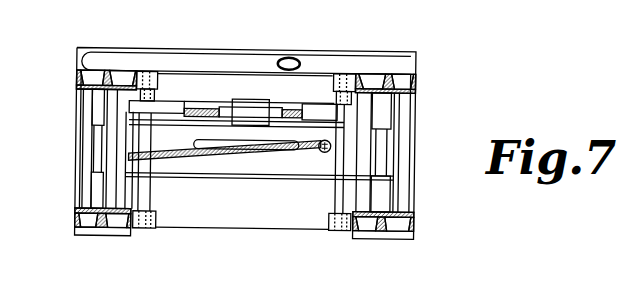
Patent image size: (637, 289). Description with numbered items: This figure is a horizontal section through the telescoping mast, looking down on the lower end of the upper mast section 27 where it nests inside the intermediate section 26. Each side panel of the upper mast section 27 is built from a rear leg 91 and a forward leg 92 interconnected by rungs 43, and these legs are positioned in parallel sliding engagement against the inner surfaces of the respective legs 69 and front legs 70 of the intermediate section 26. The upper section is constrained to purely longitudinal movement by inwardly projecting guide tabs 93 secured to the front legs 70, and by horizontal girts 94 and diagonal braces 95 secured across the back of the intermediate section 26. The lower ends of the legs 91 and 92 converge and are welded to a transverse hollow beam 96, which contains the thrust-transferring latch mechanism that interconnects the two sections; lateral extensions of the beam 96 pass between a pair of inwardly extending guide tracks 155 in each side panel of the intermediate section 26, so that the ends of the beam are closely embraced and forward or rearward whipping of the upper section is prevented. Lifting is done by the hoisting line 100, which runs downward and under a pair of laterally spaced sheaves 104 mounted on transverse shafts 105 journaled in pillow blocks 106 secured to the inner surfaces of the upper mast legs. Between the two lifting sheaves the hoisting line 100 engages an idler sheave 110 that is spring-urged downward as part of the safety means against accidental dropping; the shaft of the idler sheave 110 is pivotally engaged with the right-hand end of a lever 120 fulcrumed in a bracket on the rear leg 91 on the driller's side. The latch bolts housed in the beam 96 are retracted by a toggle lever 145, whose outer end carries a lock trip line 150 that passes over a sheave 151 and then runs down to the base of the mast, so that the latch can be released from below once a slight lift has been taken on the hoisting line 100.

The intermediate section 26 is at (76, 143).
The upper mast section 27 is at (202, 183).
The rungs 43 is at (83, 161).
The legs of the intermediate section 69 is at (80, 78).
The front legs of the intermediate section 70 is at (79, 216).
The rear leg 91 is at (126, 78).
The forward leg 92 is at (114, 220).
The guide tabs 93 is at (95, 230).
The horizontal girts 94 is at (316, 58).
The diagonal braces 95 is at (213, 62).
The transverse hollow beam 96 is at (266, 168).
The hoisting line 100 is at (210, 108).
The sheaves 104 is at (170, 97).
The transverse shafts 105 is at (146, 188).
The pillow blocks 106 is at (149, 74).
The idler sheave 110 is at (225, 108).
The lever 120 is at (270, 100).
The lever 145 is at (322, 148).
The lock trip line 150 is at (247, 158).
The sheave 151 is at (193, 142).
The guide tracks 155 is at (99, 112).